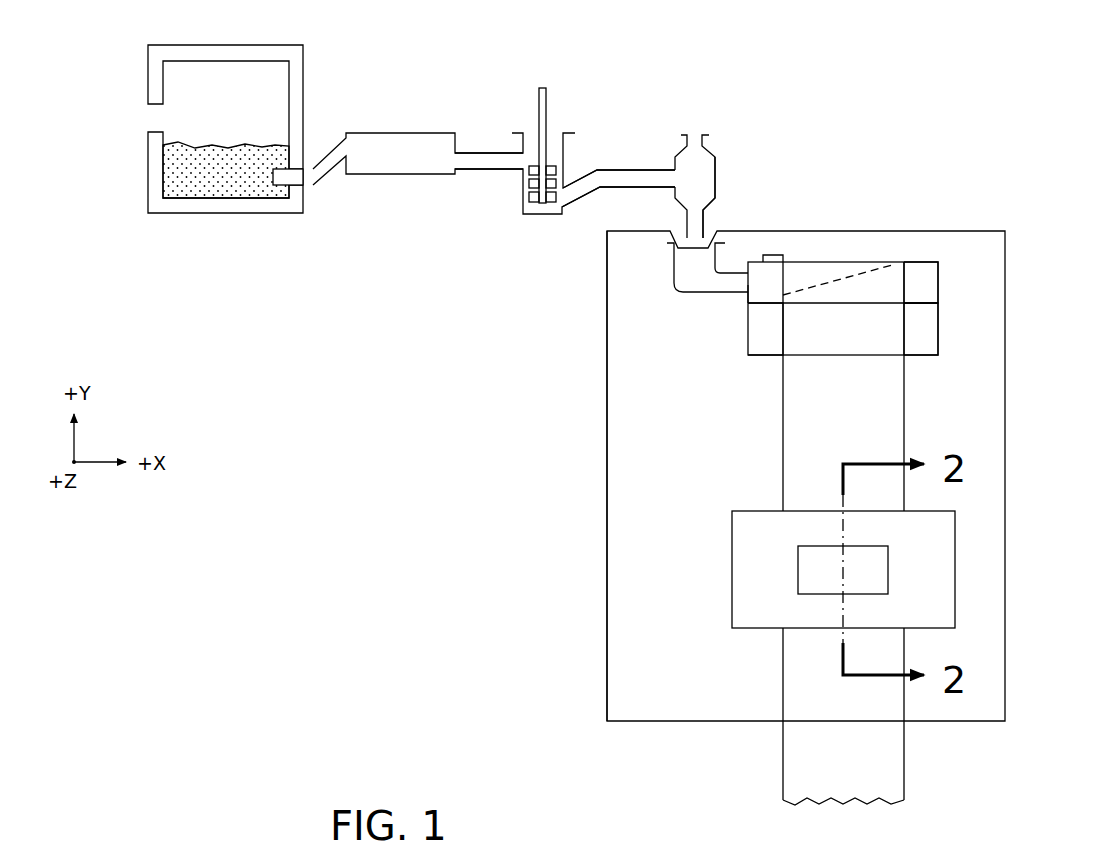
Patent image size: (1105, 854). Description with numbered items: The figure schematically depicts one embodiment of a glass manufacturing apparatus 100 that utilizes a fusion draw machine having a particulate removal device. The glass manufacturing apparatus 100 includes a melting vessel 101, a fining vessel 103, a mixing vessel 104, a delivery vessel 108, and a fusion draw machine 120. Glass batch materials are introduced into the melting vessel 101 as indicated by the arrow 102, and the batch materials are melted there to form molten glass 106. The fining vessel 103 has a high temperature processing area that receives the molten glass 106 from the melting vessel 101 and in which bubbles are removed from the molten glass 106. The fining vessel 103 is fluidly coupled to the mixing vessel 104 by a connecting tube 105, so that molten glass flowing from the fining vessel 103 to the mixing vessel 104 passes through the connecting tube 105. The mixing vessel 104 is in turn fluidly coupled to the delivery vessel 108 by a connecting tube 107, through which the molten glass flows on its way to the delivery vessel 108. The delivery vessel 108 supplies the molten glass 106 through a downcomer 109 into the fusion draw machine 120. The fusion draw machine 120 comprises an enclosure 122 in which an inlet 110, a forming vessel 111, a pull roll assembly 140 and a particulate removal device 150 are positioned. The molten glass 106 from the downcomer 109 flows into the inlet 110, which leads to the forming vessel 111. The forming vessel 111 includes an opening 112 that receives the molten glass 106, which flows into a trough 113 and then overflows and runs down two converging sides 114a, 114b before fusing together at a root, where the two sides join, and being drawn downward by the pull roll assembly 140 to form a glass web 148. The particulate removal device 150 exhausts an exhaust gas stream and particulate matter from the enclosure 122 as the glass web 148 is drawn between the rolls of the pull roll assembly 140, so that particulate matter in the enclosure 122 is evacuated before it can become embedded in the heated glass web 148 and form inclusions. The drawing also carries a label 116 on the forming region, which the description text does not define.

The glass manufacturing apparatus 100 is at (990, 110).
The melting vessel 101 is at (148, 70).
The arrow 102 is at (154, 118).
The fining vessel 103 is at (383, 133).
The mixing vessel 104 is at (565, 155).
The connecting tube 105 is at (477, 170).
The molten glass 106 is at (257, 145).
The connecting tube 107 is at (628, 188).
The delivery vessel 108 is at (720, 173).
The downcomer 109 is at (705, 221).
The inlet 110 is at (675, 285).
The forming vessel 111 is at (938, 275).
The opening 112 is at (748, 297).
The trough 113 is at (847, 270).
The converging side 114a is at (793, 338).
The converging side 114b is at (938, 323).
The printhead 116 is at (823, 355).
The fusion draw machine 120 is at (1000, 208).
The enclosure 122 is at (607, 360).
The pull roll assembly 140 is at (714, 568).
The glass web 148 is at (903, 759).
The particulate removal device 150 is at (784, 541).